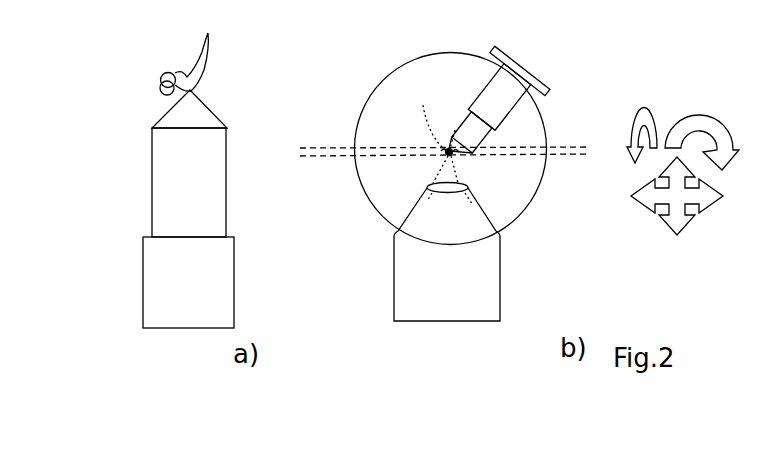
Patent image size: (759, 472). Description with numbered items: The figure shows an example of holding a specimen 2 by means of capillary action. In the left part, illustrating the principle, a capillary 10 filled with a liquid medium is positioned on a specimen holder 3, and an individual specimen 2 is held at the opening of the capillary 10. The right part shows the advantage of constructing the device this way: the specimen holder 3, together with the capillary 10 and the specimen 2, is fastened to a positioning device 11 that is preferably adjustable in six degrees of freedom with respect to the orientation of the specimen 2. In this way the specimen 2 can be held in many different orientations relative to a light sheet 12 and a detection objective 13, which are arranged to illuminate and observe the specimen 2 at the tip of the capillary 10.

The specimen 2 is at (158, 80).
The specimen holder 3 is at (155, 282).
The capillary 10 is at (162, 188).
The positioning device 11 is at (530, 80).
The light sheet 12 is at (327, 148).
The detection objective 13 is at (402, 285).